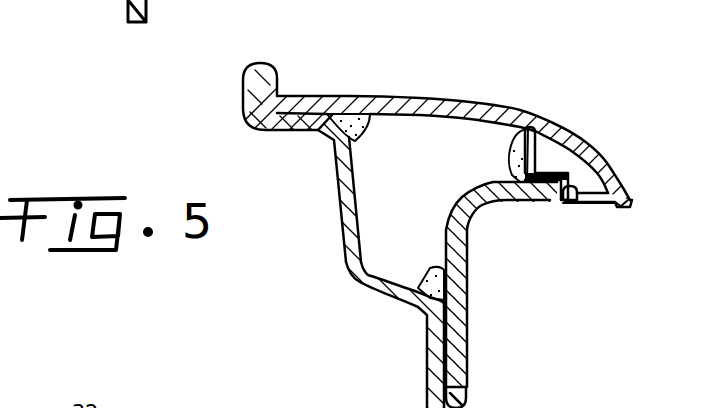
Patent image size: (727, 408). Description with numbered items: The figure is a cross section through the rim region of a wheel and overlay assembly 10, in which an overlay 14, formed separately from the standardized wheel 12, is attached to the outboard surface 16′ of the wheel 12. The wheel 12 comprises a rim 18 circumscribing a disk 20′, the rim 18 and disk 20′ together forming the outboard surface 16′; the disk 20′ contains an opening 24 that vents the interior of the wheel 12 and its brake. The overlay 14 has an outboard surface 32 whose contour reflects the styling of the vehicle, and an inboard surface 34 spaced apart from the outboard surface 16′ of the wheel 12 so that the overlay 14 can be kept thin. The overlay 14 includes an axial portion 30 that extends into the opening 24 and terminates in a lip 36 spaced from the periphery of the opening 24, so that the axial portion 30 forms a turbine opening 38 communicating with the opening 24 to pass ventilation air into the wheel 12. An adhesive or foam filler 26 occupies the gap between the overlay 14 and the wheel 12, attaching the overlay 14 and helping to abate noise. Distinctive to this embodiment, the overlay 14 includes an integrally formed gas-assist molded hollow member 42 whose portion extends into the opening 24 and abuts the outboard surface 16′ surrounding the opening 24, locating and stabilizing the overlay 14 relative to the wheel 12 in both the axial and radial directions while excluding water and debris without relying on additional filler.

The wheel and overlay assembly 10 is at (305, 260).
The wheel 12 is at (380, 294).
The overlay 14 is at (418, 98).
The outboard surface 16′ is at (487, 181).
The rim 18 is at (336, 168).
The disk 20′ is at (457, 273).
The opening 24 is at (570, 201).
The adhesive or foam filler 26 is at (355, 135).
The axial portion 30 is at (596, 156).
The outboard surface 32 is at (482, 104).
The inboard surface 34 is at (436, 118).
The lip 36 is at (622, 207).
The turbine opening 38 is at (631, 203).
The gas-assist molded hollow member 42 is at (587, 204).